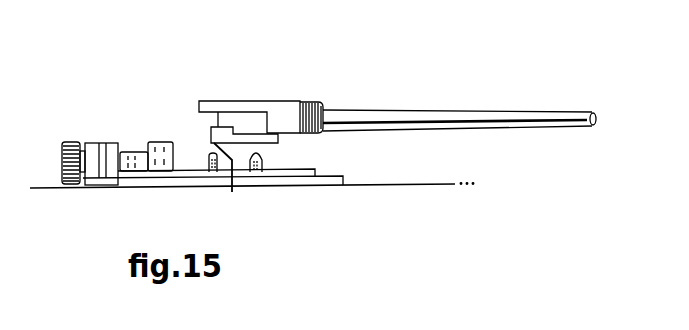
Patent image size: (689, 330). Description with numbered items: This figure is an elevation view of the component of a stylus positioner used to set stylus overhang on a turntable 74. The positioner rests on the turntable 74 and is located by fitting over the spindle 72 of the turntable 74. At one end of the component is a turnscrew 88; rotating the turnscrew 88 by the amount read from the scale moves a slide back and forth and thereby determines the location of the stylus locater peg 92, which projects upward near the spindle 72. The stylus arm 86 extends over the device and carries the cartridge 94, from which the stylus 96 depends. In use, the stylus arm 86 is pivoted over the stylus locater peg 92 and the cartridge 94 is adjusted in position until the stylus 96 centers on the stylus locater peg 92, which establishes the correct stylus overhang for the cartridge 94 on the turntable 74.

The turnscrew 88 is at (70, 142).
The cartridge 94 is at (226, 120).
The stylus locater peg 92 is at (209, 165).
The spindle 72 is at (263, 163).
The stylus 96 is at (232, 178).
The stylus arm 86 is at (508, 110).
The turntable 74 is at (391, 185).